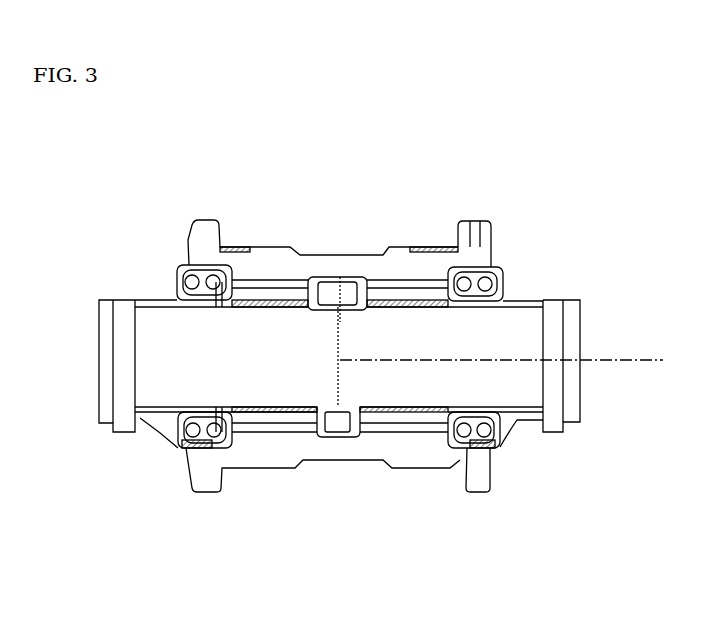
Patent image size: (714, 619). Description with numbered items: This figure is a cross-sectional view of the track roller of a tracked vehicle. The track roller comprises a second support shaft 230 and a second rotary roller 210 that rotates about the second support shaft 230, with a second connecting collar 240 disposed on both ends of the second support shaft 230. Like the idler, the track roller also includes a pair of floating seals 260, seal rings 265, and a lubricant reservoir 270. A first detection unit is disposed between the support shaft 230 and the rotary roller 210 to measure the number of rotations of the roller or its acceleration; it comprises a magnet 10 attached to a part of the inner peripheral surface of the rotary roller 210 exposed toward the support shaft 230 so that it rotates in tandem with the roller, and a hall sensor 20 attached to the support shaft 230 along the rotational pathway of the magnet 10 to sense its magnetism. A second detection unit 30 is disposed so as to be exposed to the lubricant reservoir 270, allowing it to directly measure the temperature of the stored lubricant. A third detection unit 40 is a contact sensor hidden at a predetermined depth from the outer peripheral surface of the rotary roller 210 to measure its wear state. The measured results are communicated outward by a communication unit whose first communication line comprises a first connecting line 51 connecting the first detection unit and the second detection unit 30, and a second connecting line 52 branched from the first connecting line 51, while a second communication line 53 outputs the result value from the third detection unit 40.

The magnet 10 is at (332, 280).
The hall sensor 20 is at (346, 285).
The second detection unit 30 is at (352, 437).
The third detection unit 40 is at (416, 247).
The first connecting line 51 is at (340, 347).
The second connecting line 52 is at (511, 407).
The second communication line 53 is at (468, 221).
The second rotary roller 210 is at (212, 450).
The second support shaft 230 is at (243, 368).
The second connecting collar 240 is at (522, 303).
The floating seals 260 is at (475, 432).
The seal rings 265 is at (473, 440).
The lubricant reservoir 270 is at (340, 437).